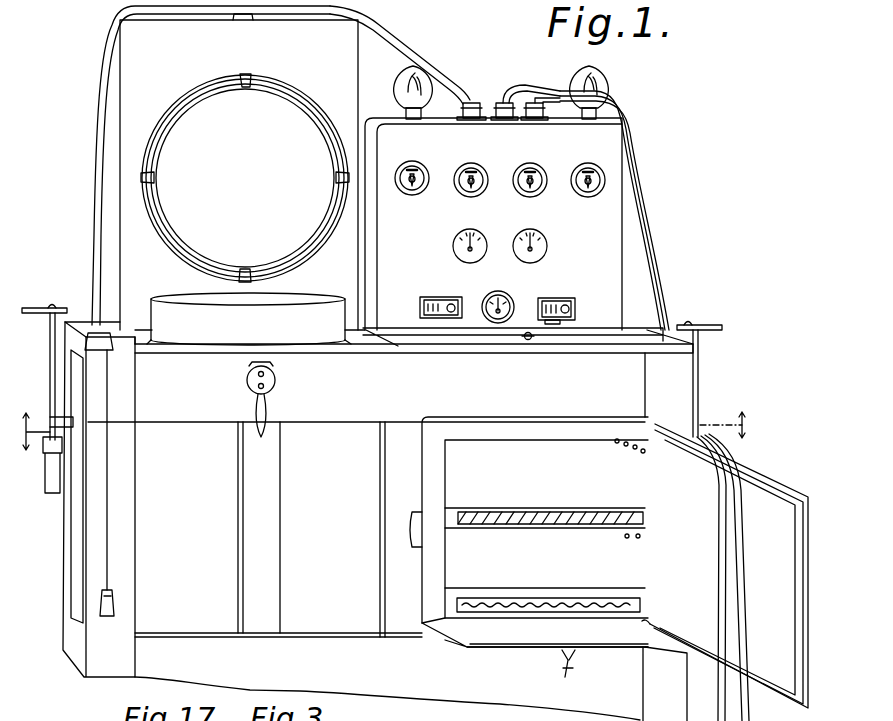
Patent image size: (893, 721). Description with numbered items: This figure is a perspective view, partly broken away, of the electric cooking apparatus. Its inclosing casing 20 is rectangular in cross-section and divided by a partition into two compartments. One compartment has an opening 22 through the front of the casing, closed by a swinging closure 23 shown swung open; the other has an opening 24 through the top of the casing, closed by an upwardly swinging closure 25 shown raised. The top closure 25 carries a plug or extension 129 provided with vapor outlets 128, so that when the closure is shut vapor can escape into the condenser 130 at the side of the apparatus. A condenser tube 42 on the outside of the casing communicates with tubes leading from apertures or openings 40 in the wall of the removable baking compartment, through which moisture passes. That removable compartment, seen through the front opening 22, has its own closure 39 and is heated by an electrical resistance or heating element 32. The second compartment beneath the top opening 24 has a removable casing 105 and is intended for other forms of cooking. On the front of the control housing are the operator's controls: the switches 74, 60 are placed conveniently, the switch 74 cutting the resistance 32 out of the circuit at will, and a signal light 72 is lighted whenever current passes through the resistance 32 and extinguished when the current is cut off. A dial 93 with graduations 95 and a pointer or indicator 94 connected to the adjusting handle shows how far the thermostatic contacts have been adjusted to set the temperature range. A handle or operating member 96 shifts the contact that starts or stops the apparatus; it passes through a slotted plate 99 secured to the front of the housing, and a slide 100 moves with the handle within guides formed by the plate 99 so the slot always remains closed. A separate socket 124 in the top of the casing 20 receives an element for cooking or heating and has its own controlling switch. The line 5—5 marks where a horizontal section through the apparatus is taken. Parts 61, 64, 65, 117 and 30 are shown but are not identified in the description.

The upwardly swinging closure 25 is at (140, 98).
The vapor outlets 128 is at (245, 86).
The plug or extension 129 is at (245, 178).
The connector with tube 61 is at (470, 97).
The connector with tube 65 is at (516, 87).
The connector with tube 64 is at (557, 100).
The signal light 72 is at (605, 95).
The switch 60 is at (540, 153).
The switch 74 is at (600, 179).
The graduations 95 is at (523, 234).
The pointer or indicator 94 is at (541, 236).
The dial 93 is at (548, 250).
The dial 117 is at (510, 289).
The plate 99 is at (553, 299).
The handle or operating member 96 is at (578, 311).
The slide 100 is at (551, 322).
The socket 124 is at (525, 339).
The condenser tube 42 is at (607, 271).
The opening 24 is at (168, 338).
The removable casing 105 is at (313, 336).
The inclosing casing 20 is at (623, 393).
The compartment frame 30 is at (437, 575).
The opening 22 is at (497, 453).
The apertures or openings 40 is at (632, 449).
The electrical resistance or heating element 32 is at (504, 605).
The closure 39 is at (533, 628).
The swinging closure 23 is at (749, 503).
The condenser 130 is at (52, 393).
The section line 5 is at (386, 430).